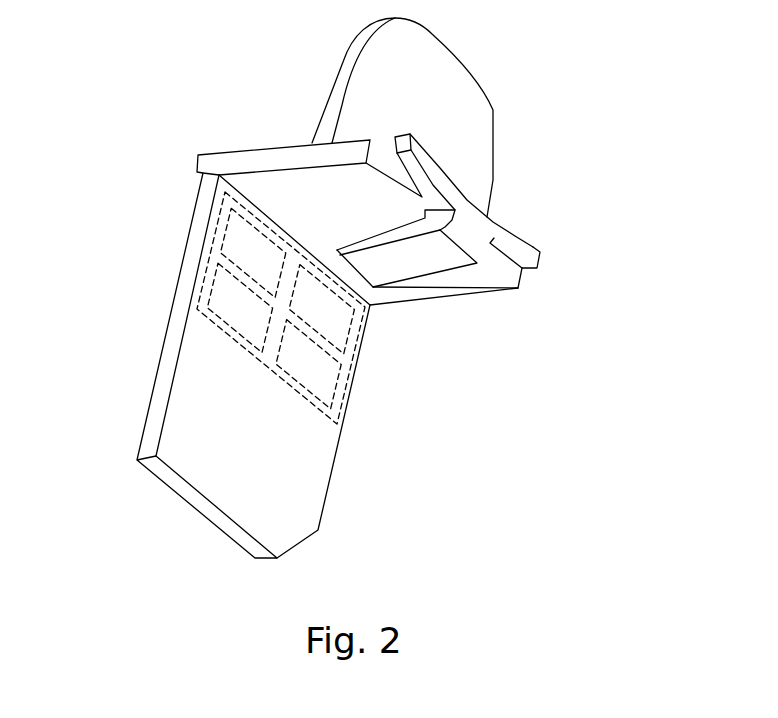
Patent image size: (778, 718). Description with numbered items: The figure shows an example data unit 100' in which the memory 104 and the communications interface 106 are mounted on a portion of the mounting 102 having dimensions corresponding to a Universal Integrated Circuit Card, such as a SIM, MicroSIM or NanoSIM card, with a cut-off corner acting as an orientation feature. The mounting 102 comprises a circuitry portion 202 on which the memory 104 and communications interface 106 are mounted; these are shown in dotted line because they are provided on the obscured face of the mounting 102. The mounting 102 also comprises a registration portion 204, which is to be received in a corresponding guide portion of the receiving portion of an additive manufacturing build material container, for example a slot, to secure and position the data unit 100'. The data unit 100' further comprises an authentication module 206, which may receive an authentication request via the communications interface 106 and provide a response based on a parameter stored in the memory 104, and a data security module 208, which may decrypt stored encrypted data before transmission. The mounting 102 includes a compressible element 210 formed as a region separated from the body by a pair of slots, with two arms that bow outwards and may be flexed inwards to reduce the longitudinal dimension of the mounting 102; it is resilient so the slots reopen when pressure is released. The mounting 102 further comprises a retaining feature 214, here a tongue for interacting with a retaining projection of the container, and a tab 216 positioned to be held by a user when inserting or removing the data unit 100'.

The data unit 100' is at (298, 294).
The mounting 102 is at (303, 153).
The memory 104 is at (230, 230).
The communications interface 106 is at (337, 330).
The circuitry portion 202 is at (210, 243).
The registration portion 204 is at (222, 460).
The authentication module 206 is at (230, 300).
The data security module 208 is at (313, 373).
The compressible element 210 is at (535, 255).
The retaining feature 214 is at (402, 273).
The tab 216 is at (398, 88).